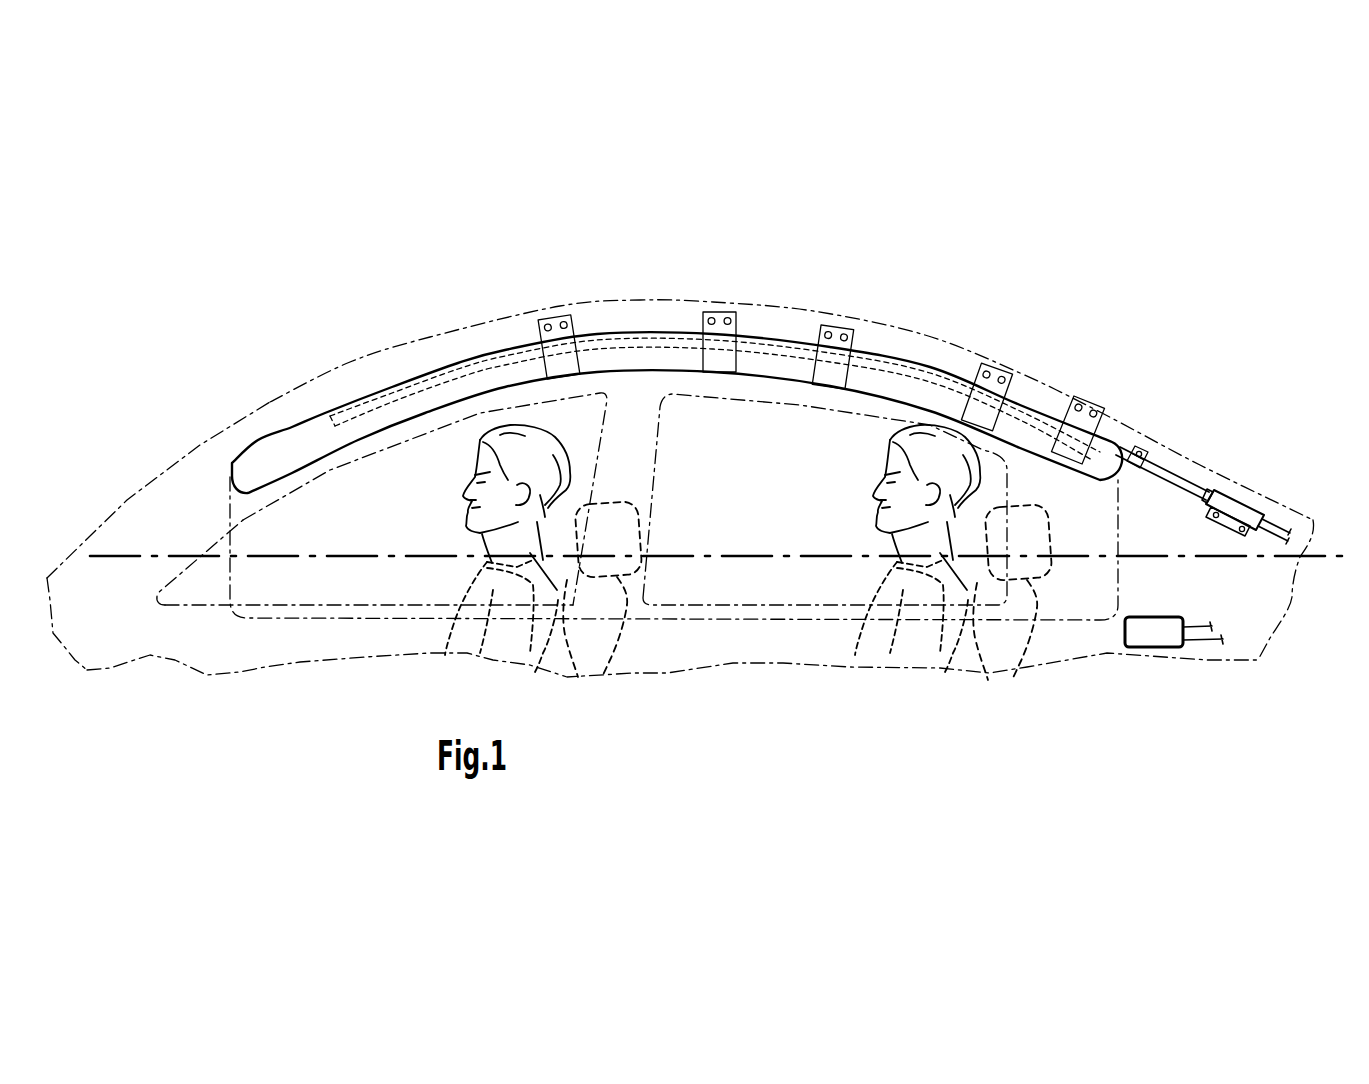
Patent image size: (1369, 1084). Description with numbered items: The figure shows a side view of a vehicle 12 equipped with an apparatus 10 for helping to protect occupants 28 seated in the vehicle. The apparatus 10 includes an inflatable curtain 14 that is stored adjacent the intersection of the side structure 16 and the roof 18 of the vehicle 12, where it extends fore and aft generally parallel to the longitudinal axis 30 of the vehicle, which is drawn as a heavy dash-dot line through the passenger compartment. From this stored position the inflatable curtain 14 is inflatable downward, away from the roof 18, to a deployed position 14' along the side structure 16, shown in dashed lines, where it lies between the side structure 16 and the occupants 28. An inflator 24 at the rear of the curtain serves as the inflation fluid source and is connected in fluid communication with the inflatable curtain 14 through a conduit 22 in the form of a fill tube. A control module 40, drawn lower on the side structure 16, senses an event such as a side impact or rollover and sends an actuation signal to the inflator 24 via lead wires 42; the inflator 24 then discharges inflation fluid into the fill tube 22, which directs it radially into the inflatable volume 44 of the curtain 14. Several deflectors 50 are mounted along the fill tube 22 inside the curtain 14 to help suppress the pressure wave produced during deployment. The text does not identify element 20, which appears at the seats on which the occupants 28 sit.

The apparatus 10 is at (612, 270).
The vehicle 12 is at (270, 398).
The inflatable curtain 14 is at (677, 407).
The deployed position of the inflatable curtain 14' is at (674, 605).
The side structure 16 is at (675, 645).
The roof 18 is at (775, 310).
The seat 20 is at (359, 578).
The conduit 22 is at (1167, 472).
The inflator 24 is at (1243, 500).
The occupants 28 is at (430, 511).
The longitudinal axis 30 is at (1253, 559).
The control module 40 is at (1154, 637).
The lead wires 42 is at (1292, 512).
The inflatable volume 44 is at (703, 582).
The deflectors 50 is at (480, 342).